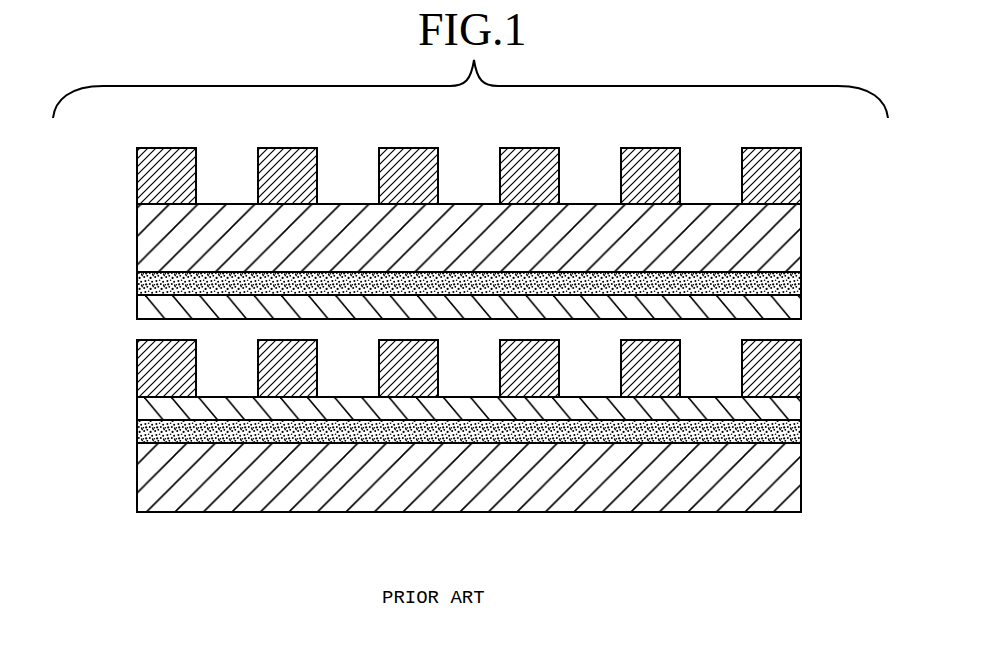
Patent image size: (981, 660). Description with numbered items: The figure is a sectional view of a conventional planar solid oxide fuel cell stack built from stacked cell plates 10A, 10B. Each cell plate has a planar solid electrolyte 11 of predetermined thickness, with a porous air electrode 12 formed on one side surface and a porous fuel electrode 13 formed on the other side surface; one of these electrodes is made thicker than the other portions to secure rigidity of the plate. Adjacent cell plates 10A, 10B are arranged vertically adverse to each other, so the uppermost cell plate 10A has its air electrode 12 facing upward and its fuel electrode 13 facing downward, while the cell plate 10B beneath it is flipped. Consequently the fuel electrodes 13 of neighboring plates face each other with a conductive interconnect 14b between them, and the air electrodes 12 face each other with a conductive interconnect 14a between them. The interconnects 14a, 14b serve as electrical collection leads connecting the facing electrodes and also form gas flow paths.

The cell plate 10A is at (813, 202).
The cell plate 10B is at (813, 393).
The solid electrolyte 11 is at (148, 281).
The air electrode 12 is at (148, 232).
The fuel electrode 13 is at (150, 302).
The interconnect 14a is at (147, 173).
The interconnect 14b is at (148, 364).